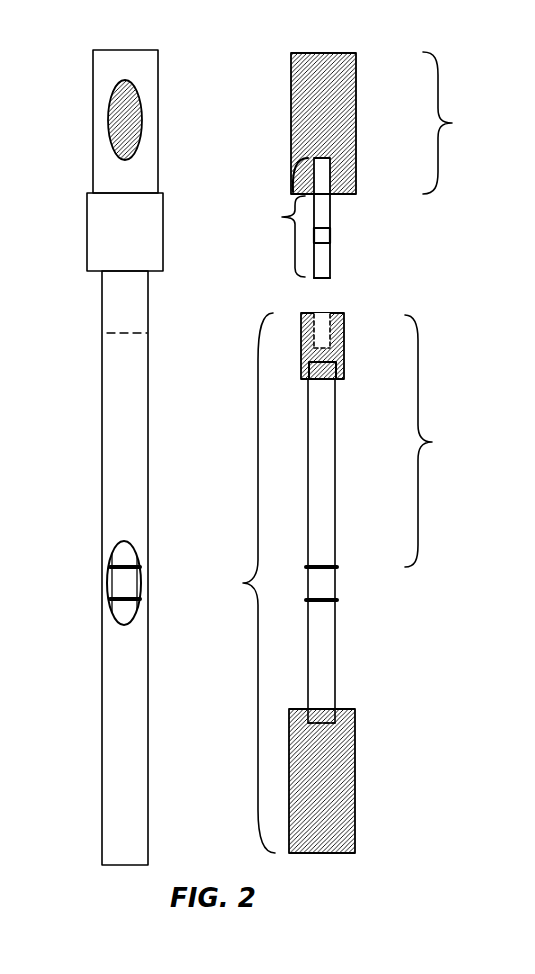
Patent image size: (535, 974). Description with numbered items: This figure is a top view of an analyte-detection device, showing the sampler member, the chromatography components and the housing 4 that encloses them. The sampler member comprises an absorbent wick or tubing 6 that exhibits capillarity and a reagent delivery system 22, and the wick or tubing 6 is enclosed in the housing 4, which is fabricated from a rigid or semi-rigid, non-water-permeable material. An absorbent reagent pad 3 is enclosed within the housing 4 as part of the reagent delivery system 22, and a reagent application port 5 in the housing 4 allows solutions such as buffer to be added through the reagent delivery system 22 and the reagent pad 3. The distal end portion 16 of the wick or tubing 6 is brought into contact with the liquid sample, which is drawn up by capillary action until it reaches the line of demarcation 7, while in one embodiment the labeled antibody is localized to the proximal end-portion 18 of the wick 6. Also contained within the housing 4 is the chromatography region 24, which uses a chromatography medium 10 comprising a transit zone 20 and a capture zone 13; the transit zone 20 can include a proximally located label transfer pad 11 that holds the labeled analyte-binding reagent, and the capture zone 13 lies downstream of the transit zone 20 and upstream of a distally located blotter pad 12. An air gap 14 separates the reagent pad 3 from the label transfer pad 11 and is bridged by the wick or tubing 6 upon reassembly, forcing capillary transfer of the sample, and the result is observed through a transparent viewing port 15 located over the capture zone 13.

The absorbent reagent pad 3 is at (347, 63).
The housing 4 is at (101, 785).
The reagent application port 5 is at (112, 100).
The absorbent wick or tubing 6 is at (296, 236).
The line of demarcation 7 is at (324, 242).
The chromatography medium 10 is at (330, 503).
The label transfer pad 11 is at (342, 352).
The blotter pad 12 is at (347, 757).
The capture zone 13 is at (120, 587).
The air gap 14 is at (110, 320).
The transparent viewing port 15 is at (122, 542).
The distal end portion 16 is at (322, 272).
The proximal end-portion 18 is at (325, 170).
The transit zone 20 is at (436, 441).
The reagent delivery system 22 is at (455, 123).
The chromatography region 24 is at (244, 583).